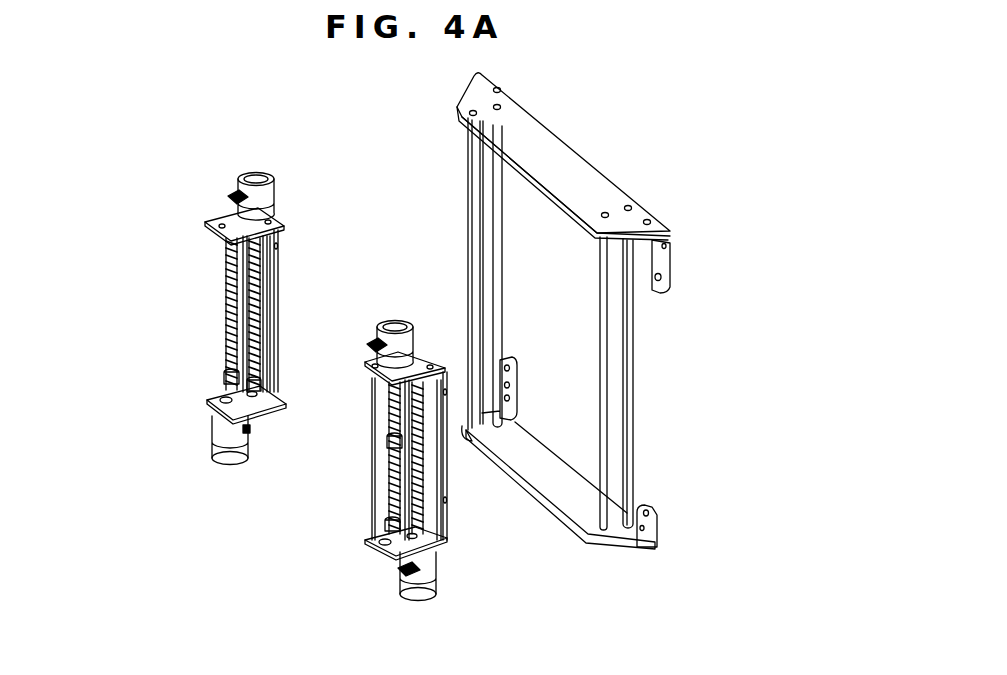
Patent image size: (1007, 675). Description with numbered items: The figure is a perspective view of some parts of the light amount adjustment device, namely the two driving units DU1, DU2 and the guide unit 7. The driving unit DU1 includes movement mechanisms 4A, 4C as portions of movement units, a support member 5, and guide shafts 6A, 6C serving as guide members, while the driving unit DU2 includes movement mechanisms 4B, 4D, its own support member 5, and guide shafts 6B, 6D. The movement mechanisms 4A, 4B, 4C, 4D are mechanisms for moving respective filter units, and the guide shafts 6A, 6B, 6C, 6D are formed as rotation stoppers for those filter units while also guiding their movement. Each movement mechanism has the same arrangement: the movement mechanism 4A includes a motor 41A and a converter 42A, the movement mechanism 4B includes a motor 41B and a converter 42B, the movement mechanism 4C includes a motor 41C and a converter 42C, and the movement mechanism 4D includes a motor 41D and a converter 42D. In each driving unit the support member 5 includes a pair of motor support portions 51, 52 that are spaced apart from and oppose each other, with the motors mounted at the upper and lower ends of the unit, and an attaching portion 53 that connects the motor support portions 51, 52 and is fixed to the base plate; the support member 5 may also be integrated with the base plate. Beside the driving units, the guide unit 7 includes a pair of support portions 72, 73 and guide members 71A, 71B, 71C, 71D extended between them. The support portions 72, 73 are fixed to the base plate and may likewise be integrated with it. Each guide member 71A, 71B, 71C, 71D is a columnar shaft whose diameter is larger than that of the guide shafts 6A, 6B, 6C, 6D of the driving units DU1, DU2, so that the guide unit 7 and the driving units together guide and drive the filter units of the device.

The guide unit 7 is at (430, 104).
The support portion 72 is at (549, 141).
The guide member 71A is at (630, 356).
The guide member 71B is at (494, 270).
The guide member 71C is at (603, 430).
The guide member 71D is at (470, 213).
The support portion 73 is at (535, 446).
The driving unit DU1 is at (208, 180).
The driving unit DU2 is at (471, 562).
The movement mechanism 4A is at (262, 157).
The movement mechanism 4B is at (445, 584).
The movement mechanism 4C is at (227, 468).
The movement mechanism 4D is at (385, 316).
The motor 41A is at (276, 187).
The motor 41B is at (400, 579).
The motor 41C is at (244, 447).
The motor 41D is at (380, 345).
The converter 42A is at (254, 272).
The converter 42B is at (440, 516).
The converter 42C is at (232, 320).
The converter 42D is at (392, 489).
The support member 5 is at (272, 297).
The motor support portion 51 is at (218, 227).
The motor support portion 52 is at (214, 406).
The attaching portion 53 is at (280, 252).
The guide shaft 6A is at (263, 389).
The guide shaft 6B is at (398, 443).
The guide shaft 6C is at (240, 378).
The guide shaft 6D is at (385, 525).